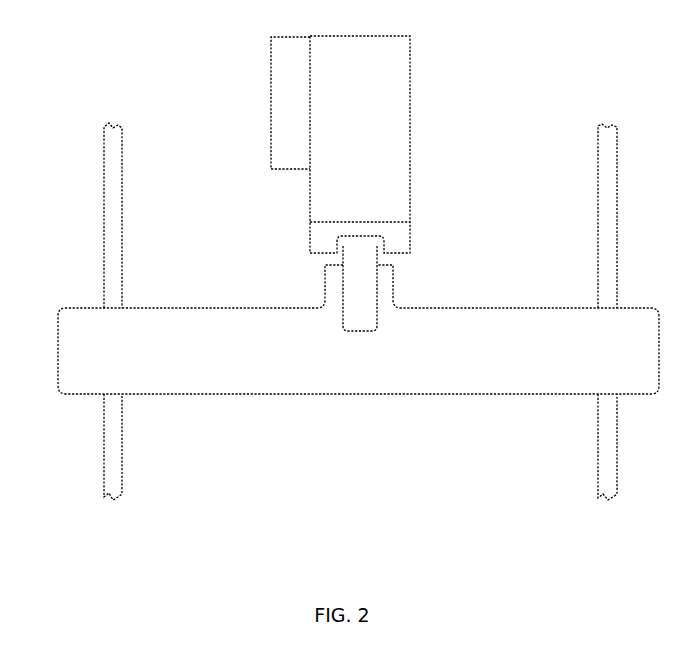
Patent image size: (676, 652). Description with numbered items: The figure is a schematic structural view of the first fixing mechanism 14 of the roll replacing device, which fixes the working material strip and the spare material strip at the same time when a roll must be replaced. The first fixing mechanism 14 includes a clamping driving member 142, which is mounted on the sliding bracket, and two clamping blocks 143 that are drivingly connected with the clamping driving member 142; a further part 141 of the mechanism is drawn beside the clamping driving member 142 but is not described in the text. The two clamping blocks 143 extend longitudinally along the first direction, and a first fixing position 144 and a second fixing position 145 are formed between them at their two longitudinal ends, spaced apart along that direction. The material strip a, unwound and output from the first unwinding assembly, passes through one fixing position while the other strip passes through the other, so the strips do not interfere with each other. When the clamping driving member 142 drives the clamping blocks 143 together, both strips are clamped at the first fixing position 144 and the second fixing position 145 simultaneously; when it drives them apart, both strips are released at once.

The first fixing mechanism 14 is at (128, 50).
The first housing portion 141 is at (280, 117).
The clamping driving member 142 is at (397, 134).
The clamping block 143 is at (323, 378).
The first fixing position 144 is at (93, 401).
The second fixing position 145 is at (592, 401).
The material strip a is at (112, 467).